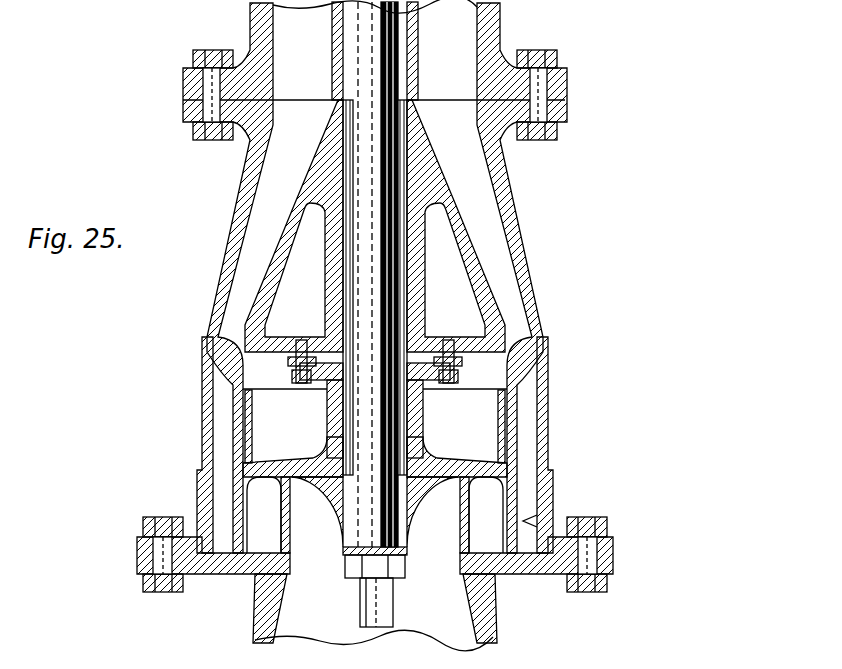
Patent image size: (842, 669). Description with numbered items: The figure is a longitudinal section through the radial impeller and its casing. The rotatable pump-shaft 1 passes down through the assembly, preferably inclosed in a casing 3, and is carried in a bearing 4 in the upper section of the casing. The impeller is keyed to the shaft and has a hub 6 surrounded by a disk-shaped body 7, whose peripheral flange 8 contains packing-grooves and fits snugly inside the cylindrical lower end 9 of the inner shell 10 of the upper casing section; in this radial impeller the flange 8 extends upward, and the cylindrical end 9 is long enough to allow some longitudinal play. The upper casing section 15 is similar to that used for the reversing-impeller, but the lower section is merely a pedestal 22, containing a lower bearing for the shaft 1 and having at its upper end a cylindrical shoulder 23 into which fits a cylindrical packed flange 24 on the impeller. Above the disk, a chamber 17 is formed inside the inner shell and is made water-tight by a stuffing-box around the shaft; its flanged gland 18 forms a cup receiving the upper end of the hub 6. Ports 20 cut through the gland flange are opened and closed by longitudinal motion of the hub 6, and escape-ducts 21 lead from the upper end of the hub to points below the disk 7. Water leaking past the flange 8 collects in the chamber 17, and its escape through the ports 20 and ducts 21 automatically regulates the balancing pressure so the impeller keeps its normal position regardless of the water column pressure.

The pump-shaft 1 is at (392, 615).
The casing 3 is at (333, 50).
The bearing 4 is at (345, 158).
The hub 6 is at (327, 432).
The disk-shaped body 7 is at (444, 459).
The peripheral flange 8 is at (500, 423).
The cylindrical lower end 9 is at (520, 428).
The inner shell 10 is at (374, 164).
The upper casing 15 is at (375, 278).
The chamber 17 is at (375, 374).
The gland 18 is at (412, 314).
The ports 20 is at (318, 388).
The escape-ducts 21 is at (414, 423).
The pedestal 22 is at (362, 612).
The cylindrical shoulder 23 is at (471, 575).
The cylindrical packed flange 24 is at (462, 533).